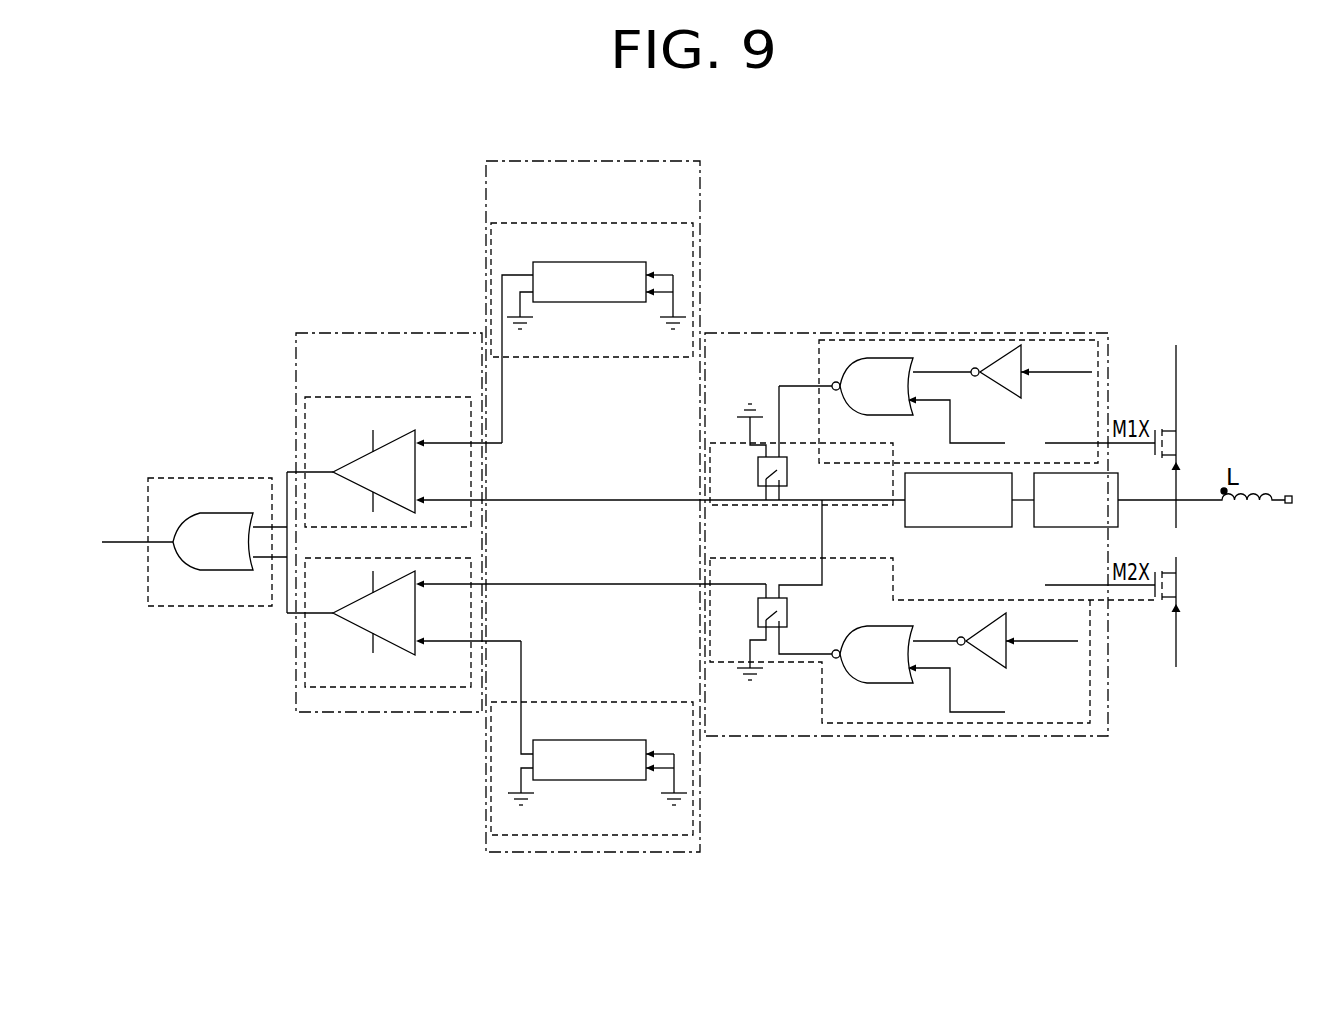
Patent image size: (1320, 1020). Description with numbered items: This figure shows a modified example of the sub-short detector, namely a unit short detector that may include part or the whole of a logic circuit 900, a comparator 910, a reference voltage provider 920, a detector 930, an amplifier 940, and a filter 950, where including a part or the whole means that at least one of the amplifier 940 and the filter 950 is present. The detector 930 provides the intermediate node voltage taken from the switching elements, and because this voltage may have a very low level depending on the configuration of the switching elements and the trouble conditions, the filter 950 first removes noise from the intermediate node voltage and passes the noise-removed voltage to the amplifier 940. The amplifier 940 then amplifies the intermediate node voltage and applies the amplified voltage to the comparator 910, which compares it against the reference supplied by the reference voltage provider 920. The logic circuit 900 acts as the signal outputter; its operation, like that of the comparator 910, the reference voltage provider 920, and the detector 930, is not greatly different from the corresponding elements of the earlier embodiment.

The logic circuit 900 is at (210, 477).
The comparator 910 is at (390, 331).
The reference voltage provider 920 is at (596, 159).
The detector 930 is at (908, 331).
The amplifier 940 is at (935, 528).
The filter 950 is at (1132, 534).